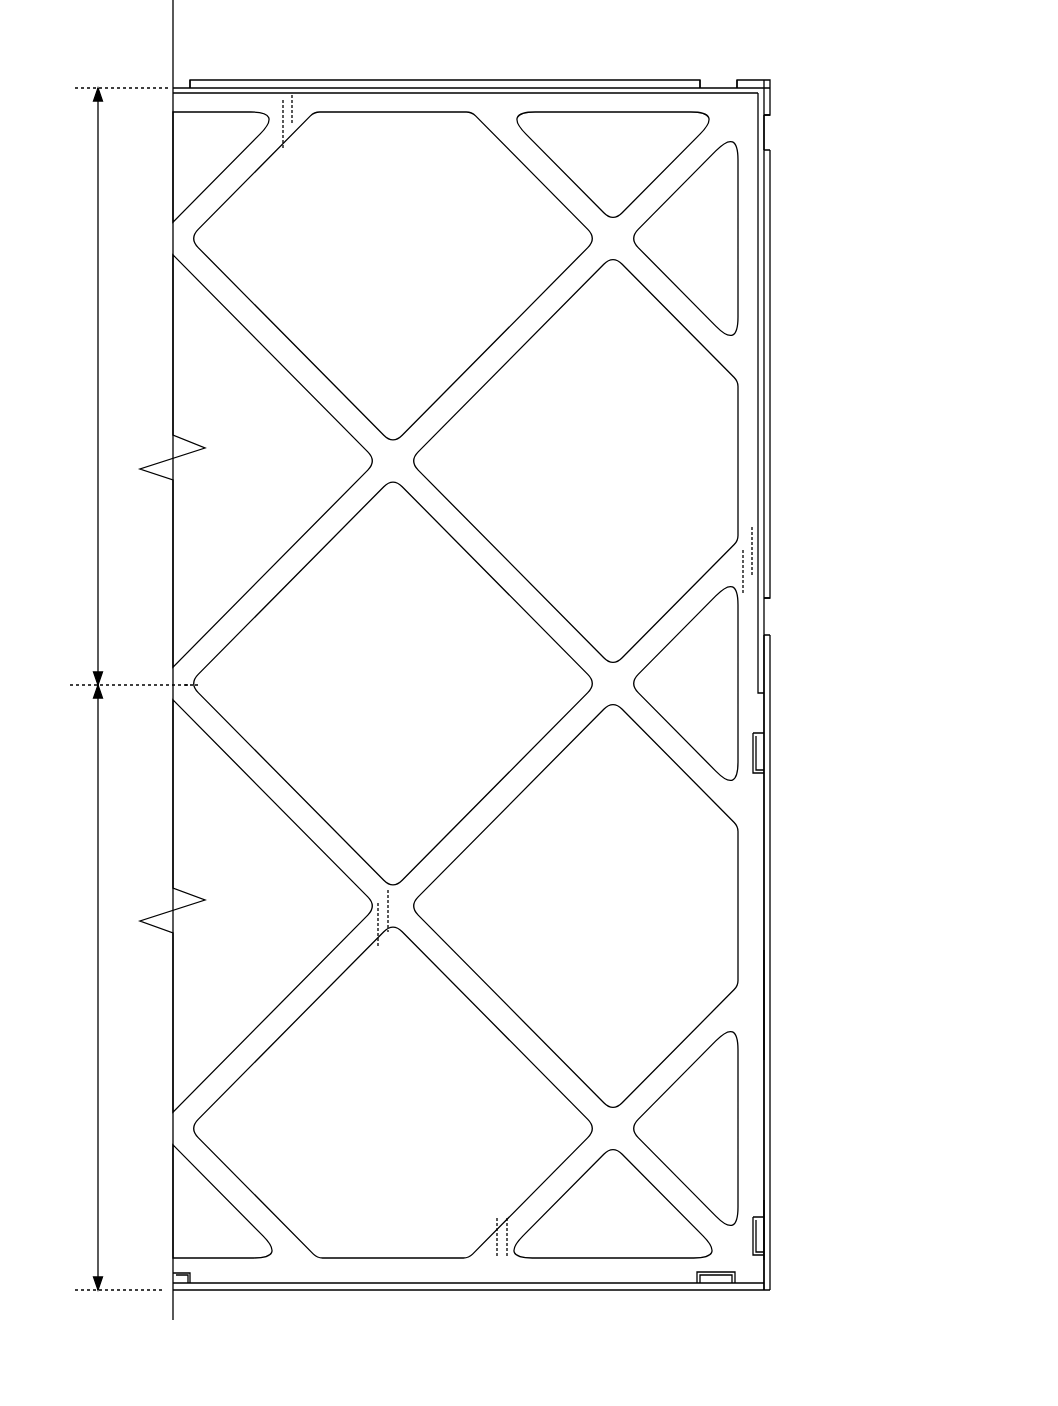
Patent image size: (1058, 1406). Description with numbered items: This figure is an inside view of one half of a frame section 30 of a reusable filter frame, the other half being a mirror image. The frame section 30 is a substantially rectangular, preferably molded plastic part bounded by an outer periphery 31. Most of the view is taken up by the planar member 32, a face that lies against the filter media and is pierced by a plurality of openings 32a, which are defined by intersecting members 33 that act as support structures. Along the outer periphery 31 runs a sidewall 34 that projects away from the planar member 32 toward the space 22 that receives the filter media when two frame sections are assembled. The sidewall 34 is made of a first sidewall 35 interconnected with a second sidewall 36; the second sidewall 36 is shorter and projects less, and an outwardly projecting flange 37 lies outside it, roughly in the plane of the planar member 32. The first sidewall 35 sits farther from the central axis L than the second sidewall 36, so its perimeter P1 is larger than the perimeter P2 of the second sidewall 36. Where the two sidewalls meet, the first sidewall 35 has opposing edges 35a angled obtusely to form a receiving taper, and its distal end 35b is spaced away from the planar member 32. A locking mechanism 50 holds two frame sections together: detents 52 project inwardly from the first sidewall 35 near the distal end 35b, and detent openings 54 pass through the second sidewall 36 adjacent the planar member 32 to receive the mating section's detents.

The space 22 is at (395, 152).
The frame section 30 is at (800, 60).
The outer periphery 31 is at (793, 372).
The planar member 32 is at (205, 588).
The openings 32a is at (262, 490).
The intersecting members 33 is at (448, 858).
The sidewall 34 is at (540, 86).
The first sidewall 35 is at (770, 852).
The opposing edges 35a is at (766, 690).
The distal end 35b is at (770, 1003).
The second sidewall 36 is at (622, 87).
The flange 37 is at (268, 80).
The locking mechanism 50 is at (787, 120).
The detent 52 is at (776, 753).
The detent opening 54 is at (182, 76).
The perimeter of the first sidewall P1 is at (98, 977).
The perimeter of the second sidewall P2 is at (98, 396).
The central axis L is at (193, 686).